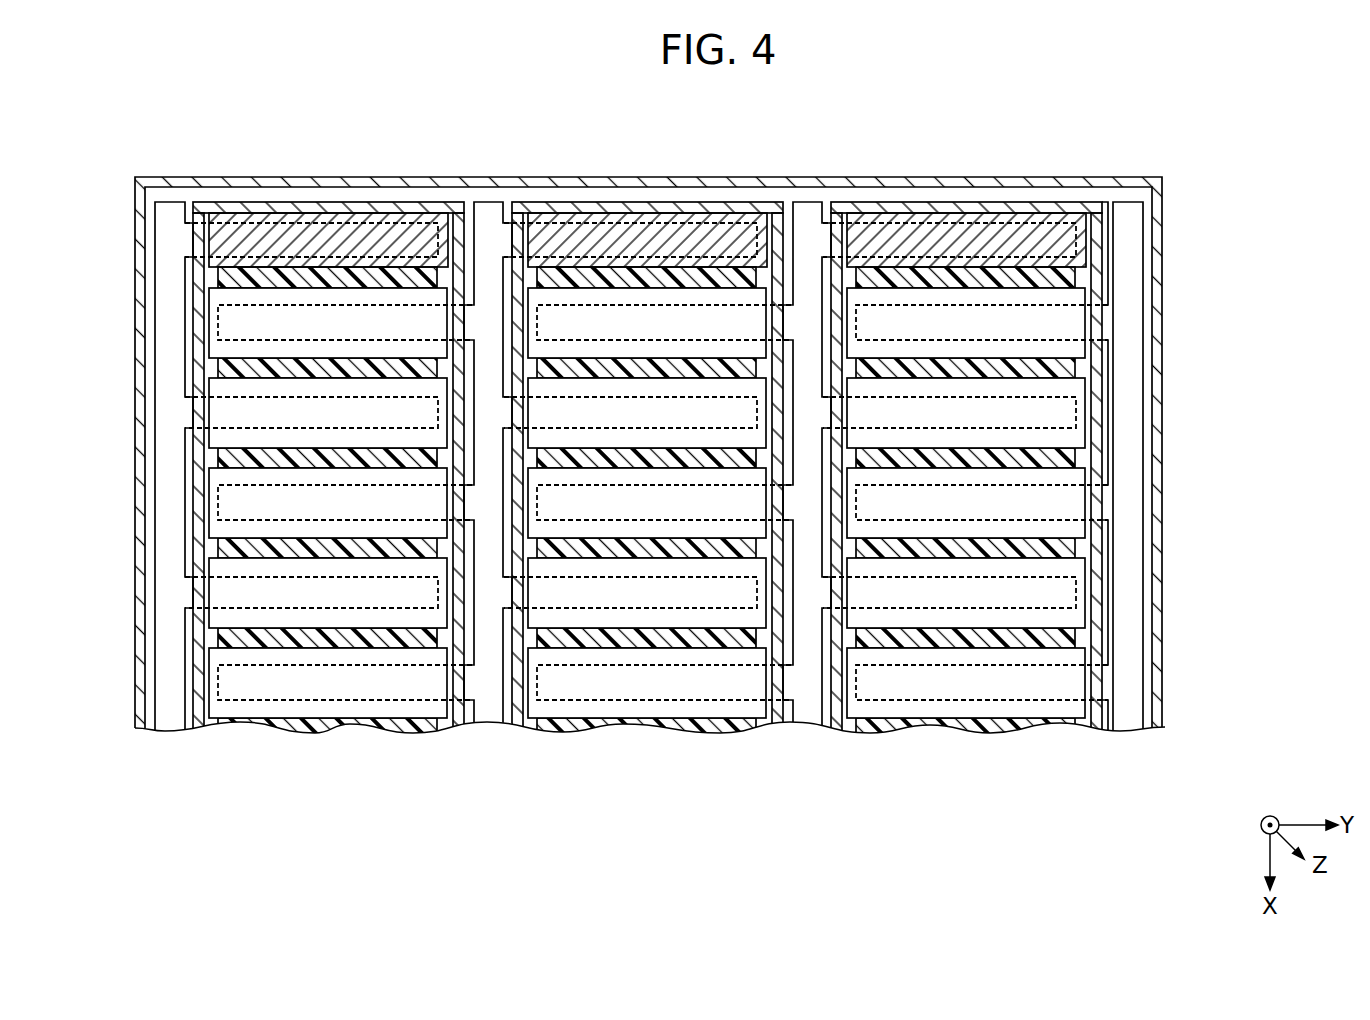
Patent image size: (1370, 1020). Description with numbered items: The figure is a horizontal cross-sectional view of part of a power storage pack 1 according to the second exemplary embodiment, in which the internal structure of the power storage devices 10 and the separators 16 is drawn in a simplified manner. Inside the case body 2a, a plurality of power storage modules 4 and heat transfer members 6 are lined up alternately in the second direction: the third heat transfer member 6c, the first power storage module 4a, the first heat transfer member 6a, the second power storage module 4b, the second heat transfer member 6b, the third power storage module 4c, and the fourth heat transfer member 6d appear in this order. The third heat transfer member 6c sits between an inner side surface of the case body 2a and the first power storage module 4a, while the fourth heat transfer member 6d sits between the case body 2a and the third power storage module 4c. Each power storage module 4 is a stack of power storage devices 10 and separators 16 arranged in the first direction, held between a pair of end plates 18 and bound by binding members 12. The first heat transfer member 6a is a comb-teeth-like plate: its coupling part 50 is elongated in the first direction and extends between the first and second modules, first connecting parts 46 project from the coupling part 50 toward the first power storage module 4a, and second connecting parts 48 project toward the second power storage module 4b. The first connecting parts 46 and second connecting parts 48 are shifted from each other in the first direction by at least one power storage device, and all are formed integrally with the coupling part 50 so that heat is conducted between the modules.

The power storage pack 1 is at (680, 902).
The case body 2a is at (1163, 722).
The power storage module 4 is at (592, 457).
The first power storage module 4a is at (274, 512).
The second power storage module 4b is at (667, 457).
The third power storage module 4c is at (965, 745).
The heat transfer member 6 is at (652, 462).
The first heat transfer member 6a is at (491, 462).
The second heat transfer member 6b is at (808, 745).
The third heat transfer member 6c is at (170, 745).
The fourth heat transfer member 6d is at (1127, 745).
The power storage device 10 is at (675, 307).
The binding member 12 is at (647, 433).
The separator 16 is at (652, 281).
The end plate 18 is at (617, 211).
The first connecting part 46 is at (255, 306).
The second connecting part 48 is at (762, 236).
The coupling part 50 is at (494, 201).